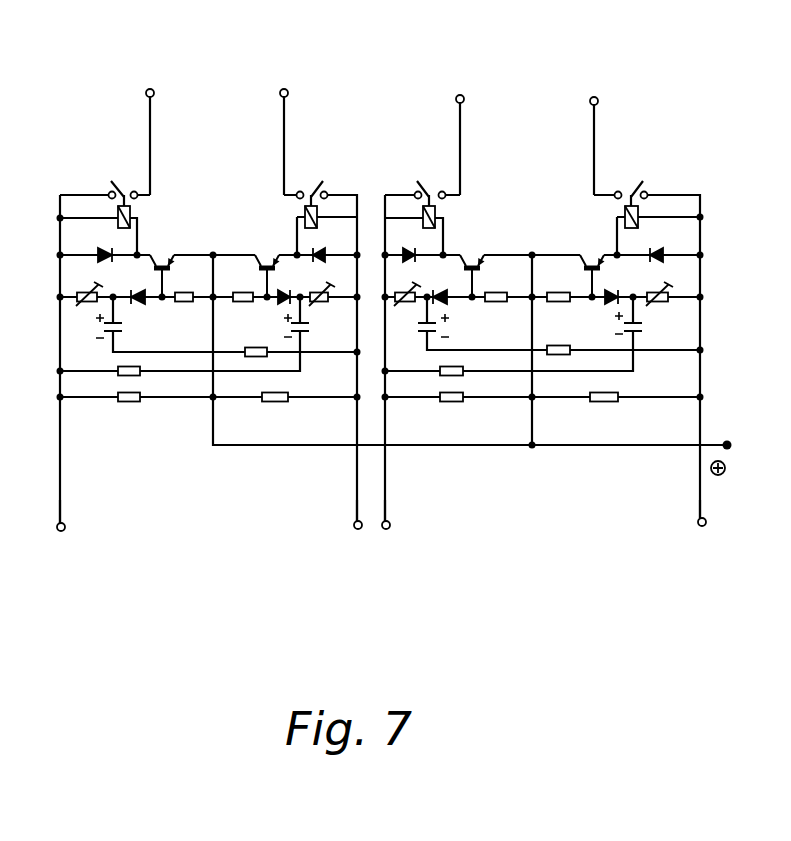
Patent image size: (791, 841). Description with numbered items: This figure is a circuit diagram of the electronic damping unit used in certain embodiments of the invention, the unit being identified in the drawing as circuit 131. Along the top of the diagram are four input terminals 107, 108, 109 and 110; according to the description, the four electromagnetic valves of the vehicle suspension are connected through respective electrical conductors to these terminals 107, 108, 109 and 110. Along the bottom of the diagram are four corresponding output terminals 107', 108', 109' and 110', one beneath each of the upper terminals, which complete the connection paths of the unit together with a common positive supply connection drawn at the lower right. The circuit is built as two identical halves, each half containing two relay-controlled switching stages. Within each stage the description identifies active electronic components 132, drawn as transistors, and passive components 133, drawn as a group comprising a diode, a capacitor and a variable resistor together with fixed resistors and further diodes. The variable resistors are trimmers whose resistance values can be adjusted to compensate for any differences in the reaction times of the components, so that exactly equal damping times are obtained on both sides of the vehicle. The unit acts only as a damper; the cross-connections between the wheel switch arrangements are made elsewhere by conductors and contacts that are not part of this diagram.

The terminal 107 is at (143, 128).
The terminal 108 is at (287, 128).
The terminal 109 is at (469, 128).
The terminal 110 is at (603, 127).
The output terminal 107' is at (46, 536).
The output terminal 108' is at (343, 533).
The output terminal 109' is at (384, 533).
The output terminal 110' is at (695, 534).
The control circuit 131 is at (360, 112).
The active electronic components 132 is at (262, 250).
The passive components 133 is at (562, 302).